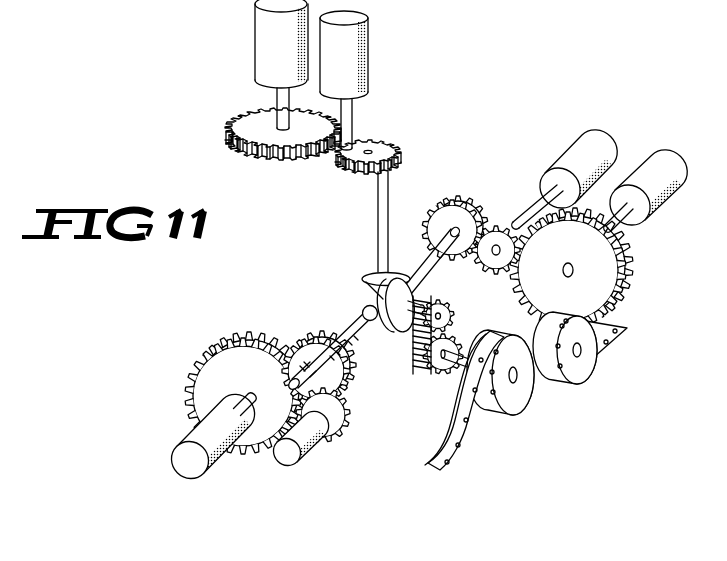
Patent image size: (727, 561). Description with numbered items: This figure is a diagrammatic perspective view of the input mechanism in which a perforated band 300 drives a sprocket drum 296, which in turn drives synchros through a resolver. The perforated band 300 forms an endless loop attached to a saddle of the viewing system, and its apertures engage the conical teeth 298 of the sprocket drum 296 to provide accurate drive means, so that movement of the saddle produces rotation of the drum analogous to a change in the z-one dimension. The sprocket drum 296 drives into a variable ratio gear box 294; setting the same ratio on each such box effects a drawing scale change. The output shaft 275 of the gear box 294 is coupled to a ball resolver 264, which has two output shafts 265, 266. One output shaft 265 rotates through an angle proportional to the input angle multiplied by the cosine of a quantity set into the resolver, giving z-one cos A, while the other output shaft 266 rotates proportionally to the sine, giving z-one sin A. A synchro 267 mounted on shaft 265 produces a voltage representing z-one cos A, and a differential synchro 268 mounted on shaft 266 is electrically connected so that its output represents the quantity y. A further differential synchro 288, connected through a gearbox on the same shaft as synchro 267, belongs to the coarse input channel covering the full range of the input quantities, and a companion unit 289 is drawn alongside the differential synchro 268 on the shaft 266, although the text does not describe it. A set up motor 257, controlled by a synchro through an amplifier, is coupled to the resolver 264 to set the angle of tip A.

The motor 289 is at (257, 36).
The differential synchro 268 is at (369, 50).
The synchro 267 is at (577, 150).
The differential synchro 288 is at (653, 163).
The output shaft 266 is at (378, 200).
The ball resolver 264 is at (352, 292).
The output shaft 265 is at (432, 268).
The output shaft 275 is at (400, 332).
The variable ratio gear box 294 is at (400, 350).
The sprocket drum 296 is at (520, 395).
The teeth 298 is at (499, 332).
The perforated band 300 is at (607, 350).
The set up motor 257 is at (292, 465).